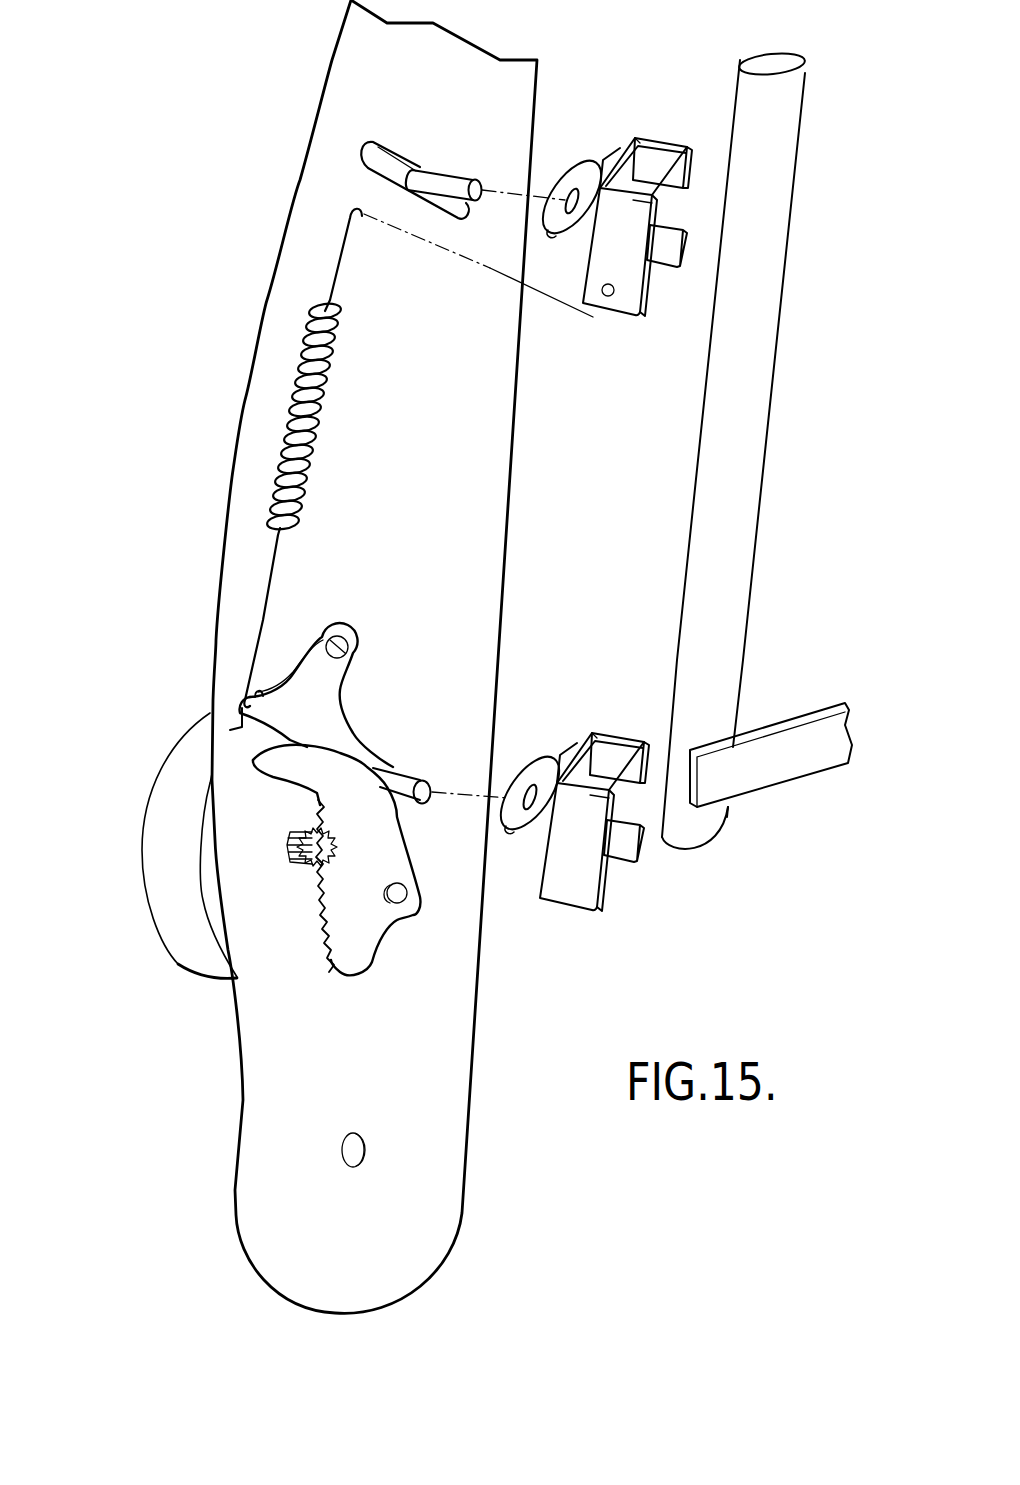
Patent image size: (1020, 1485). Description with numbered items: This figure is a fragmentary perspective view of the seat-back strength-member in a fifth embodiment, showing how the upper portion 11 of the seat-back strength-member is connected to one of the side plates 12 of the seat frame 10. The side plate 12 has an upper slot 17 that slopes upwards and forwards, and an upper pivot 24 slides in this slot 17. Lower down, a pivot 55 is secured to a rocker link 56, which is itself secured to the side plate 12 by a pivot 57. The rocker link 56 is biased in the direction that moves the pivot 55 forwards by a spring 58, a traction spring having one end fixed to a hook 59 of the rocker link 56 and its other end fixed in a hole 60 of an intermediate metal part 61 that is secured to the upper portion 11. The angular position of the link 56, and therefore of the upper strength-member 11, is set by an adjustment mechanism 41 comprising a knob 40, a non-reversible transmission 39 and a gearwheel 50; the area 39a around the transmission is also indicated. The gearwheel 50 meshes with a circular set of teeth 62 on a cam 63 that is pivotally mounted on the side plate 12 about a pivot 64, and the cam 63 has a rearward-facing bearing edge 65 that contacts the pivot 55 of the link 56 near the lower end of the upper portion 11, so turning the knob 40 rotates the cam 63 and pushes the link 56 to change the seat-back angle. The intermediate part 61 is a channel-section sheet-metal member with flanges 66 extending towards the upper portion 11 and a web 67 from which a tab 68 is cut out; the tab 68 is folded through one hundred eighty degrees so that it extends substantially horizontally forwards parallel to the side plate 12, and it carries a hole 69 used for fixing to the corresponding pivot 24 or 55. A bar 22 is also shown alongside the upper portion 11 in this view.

The frame plate 10 is at (480, 1135).
The upper portion of the seat-back strength-member 11 is at (762, 364).
The side plate 12 is at (290, 1100).
The upper slot 17 is at (368, 148).
The bar 22 is at (790, 740).
The upper pivot 24 is at (448, 180).
The non-reversible transmission 39 is at (220, 918).
The disk hub 39a is at (210, 843).
The knob 40 is at (175, 920).
The adjustment mechanism 41 is at (142, 907).
The gearwheel 50 is at (296, 852).
The pivot 55 is at (430, 787).
The rocker link 56 is at (330, 720).
The pivot 57 is at (328, 645).
The spring 58 is at (304, 400).
The hook 59 is at (240, 728).
The hole 60 is at (608, 297).
The intermediate metal part 61 is at (650, 288).
The circular set of teeth 62 is at (315, 945).
The cam 63 is at (360, 895).
The pivot 64 is at (402, 900).
The bearing edge 65 is at (373, 767).
The flange 66 is at (668, 150).
The web 67 is at (637, 138).
The tab 68 is at (603, 163).
The hole 69 is at (572, 196).